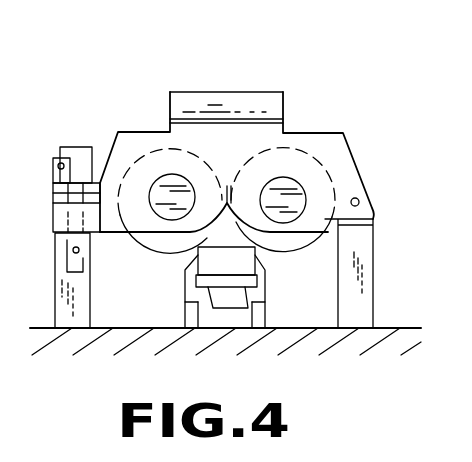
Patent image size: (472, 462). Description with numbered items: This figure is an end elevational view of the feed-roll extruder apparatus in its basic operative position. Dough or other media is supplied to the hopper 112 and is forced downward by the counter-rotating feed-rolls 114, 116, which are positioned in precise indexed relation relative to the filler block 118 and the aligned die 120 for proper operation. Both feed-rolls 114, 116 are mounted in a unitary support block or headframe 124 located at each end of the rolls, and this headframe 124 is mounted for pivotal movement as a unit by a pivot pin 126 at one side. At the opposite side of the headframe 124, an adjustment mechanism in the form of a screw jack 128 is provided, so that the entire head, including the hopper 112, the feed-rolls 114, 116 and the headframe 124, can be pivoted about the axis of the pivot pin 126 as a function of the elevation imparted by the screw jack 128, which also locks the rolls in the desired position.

The hopper 112 is at (234, 78).
The feed-roll 114 is at (288, 162).
The feed-roll 116 is at (162, 165).
The filler block 118 is at (230, 247).
The die 120 is at (300, 285).
The headframe 124 is at (341, 172).
The pivot pin 126 is at (359, 205).
The screw jack 128 is at (77, 130).